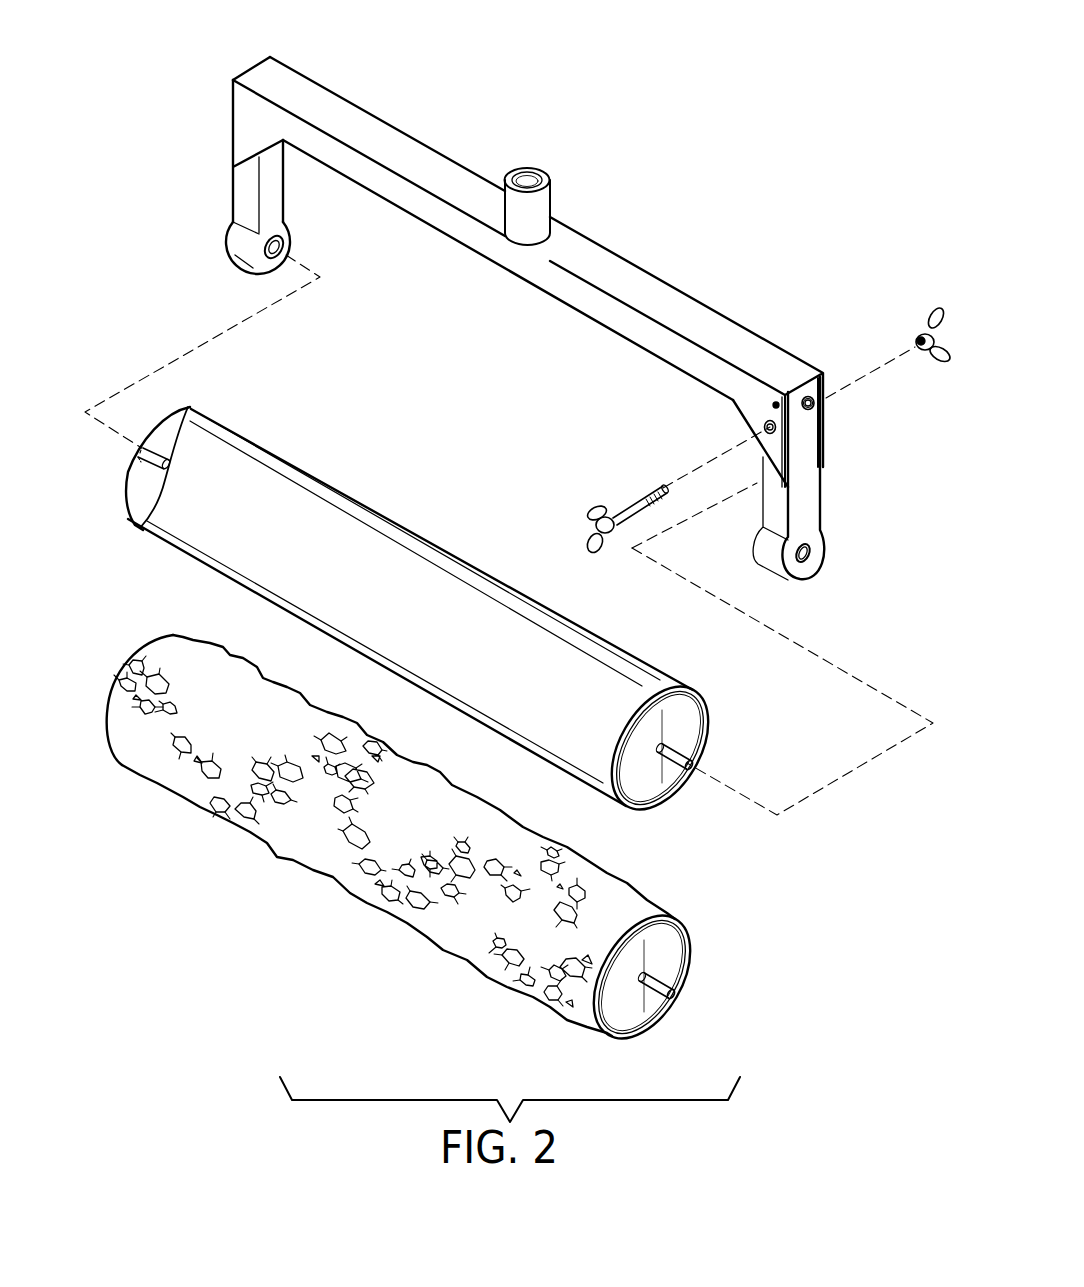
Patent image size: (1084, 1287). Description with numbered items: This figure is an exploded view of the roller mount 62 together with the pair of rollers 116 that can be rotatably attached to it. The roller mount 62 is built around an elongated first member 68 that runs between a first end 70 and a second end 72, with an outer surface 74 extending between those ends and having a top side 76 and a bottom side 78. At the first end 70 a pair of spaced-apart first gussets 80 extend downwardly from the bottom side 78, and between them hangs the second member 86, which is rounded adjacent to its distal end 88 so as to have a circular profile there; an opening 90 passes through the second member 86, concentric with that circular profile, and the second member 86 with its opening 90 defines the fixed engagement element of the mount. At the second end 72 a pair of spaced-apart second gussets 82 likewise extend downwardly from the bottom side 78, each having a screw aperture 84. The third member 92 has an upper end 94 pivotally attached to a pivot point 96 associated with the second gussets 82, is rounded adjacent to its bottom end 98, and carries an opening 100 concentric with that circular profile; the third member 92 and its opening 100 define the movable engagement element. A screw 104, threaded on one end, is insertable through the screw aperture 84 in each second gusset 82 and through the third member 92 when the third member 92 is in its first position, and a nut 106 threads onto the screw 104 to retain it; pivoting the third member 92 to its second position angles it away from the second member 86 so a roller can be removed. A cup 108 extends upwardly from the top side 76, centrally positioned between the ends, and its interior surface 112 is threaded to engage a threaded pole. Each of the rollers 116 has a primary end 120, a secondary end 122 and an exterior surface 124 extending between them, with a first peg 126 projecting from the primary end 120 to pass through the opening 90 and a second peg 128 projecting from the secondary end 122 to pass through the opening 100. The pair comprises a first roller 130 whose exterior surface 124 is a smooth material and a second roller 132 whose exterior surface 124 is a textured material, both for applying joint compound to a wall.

The roller mount 62 is at (822, 366).
The first member 68 is at (640, 273).
The first end 70 is at (251, 71).
The second end 72 is at (833, 388).
The outer surface 74 is at (324, 103).
The top side 76 is at (451, 184).
The bottom side 78 is at (503, 262).
The first gussets 80 is at (240, 125).
The second gussets 82 is at (824, 443).
The screw aperture 84 is at (826, 402).
The second member 86 is at (278, 190).
The distal end 88 is at (262, 278).
The opening 90 is at (256, 247).
The third member 92 is at (806, 485).
The upper end 94 is at (808, 403).
The pivot point 96 is at (776, 405).
The bottom end 98 is at (824, 556).
The opening 100 is at (806, 560).
The screw 104 is at (601, 508).
The nut 106 is at (930, 318).
The cup 108 is at (553, 202).
The interior surface 112 is at (527, 180).
The rollers 116 is at (122, 498).
The primary end 120 is at (168, 412).
The secondary end 122 is at (653, 780).
The exterior surface 124 is at (396, 556).
The first peg 126 is at (137, 520).
The second peg 128 is at (680, 757).
The first roller 130 is at (270, 577).
The second roller 132 is at (277, 858).